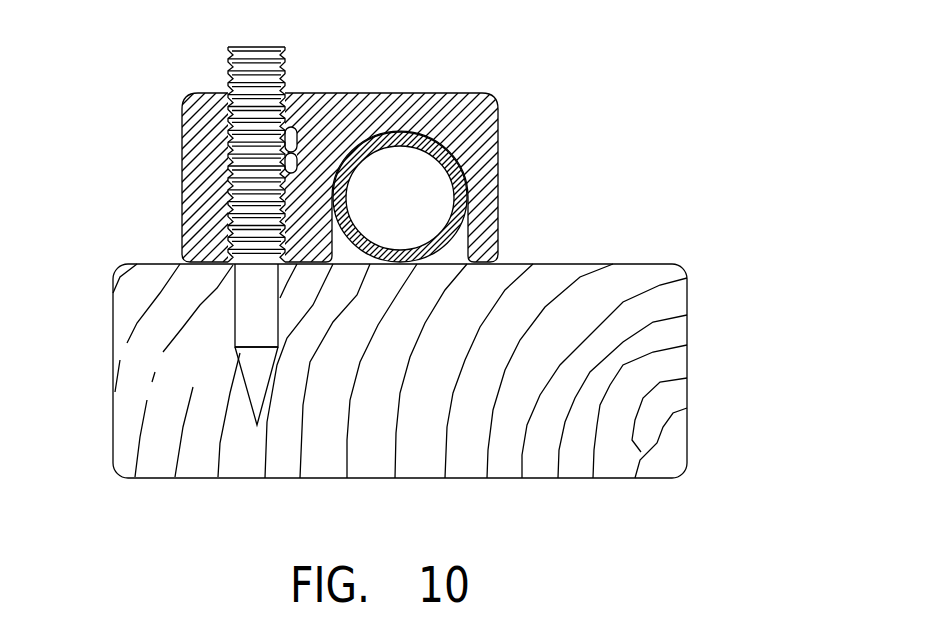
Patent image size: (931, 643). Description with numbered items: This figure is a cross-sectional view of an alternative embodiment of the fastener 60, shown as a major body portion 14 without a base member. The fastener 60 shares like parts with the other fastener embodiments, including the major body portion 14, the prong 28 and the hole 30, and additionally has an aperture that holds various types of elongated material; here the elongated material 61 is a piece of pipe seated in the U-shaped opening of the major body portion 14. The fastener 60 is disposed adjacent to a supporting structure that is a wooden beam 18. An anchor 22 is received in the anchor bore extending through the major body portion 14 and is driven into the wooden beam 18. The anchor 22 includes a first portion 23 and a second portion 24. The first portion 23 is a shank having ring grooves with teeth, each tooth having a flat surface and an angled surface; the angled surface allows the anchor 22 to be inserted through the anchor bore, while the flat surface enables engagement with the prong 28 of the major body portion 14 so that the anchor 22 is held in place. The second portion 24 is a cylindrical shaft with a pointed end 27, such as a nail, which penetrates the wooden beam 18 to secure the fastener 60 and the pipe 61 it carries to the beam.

The major body portion 14 is at (437, 93).
The wooden beam 18 is at (663, 264).
The anchor 22 is at (255, 312).
The first portion 23 is at (228, 68).
The second portion 24 is at (252, 343).
The pointed end 27 is at (257, 425).
The prong 28 is at (296, 167).
The hole 30 is at (293, 133).
The fastener 60 is at (568, 88).
The elongated material 61 is at (453, 188).